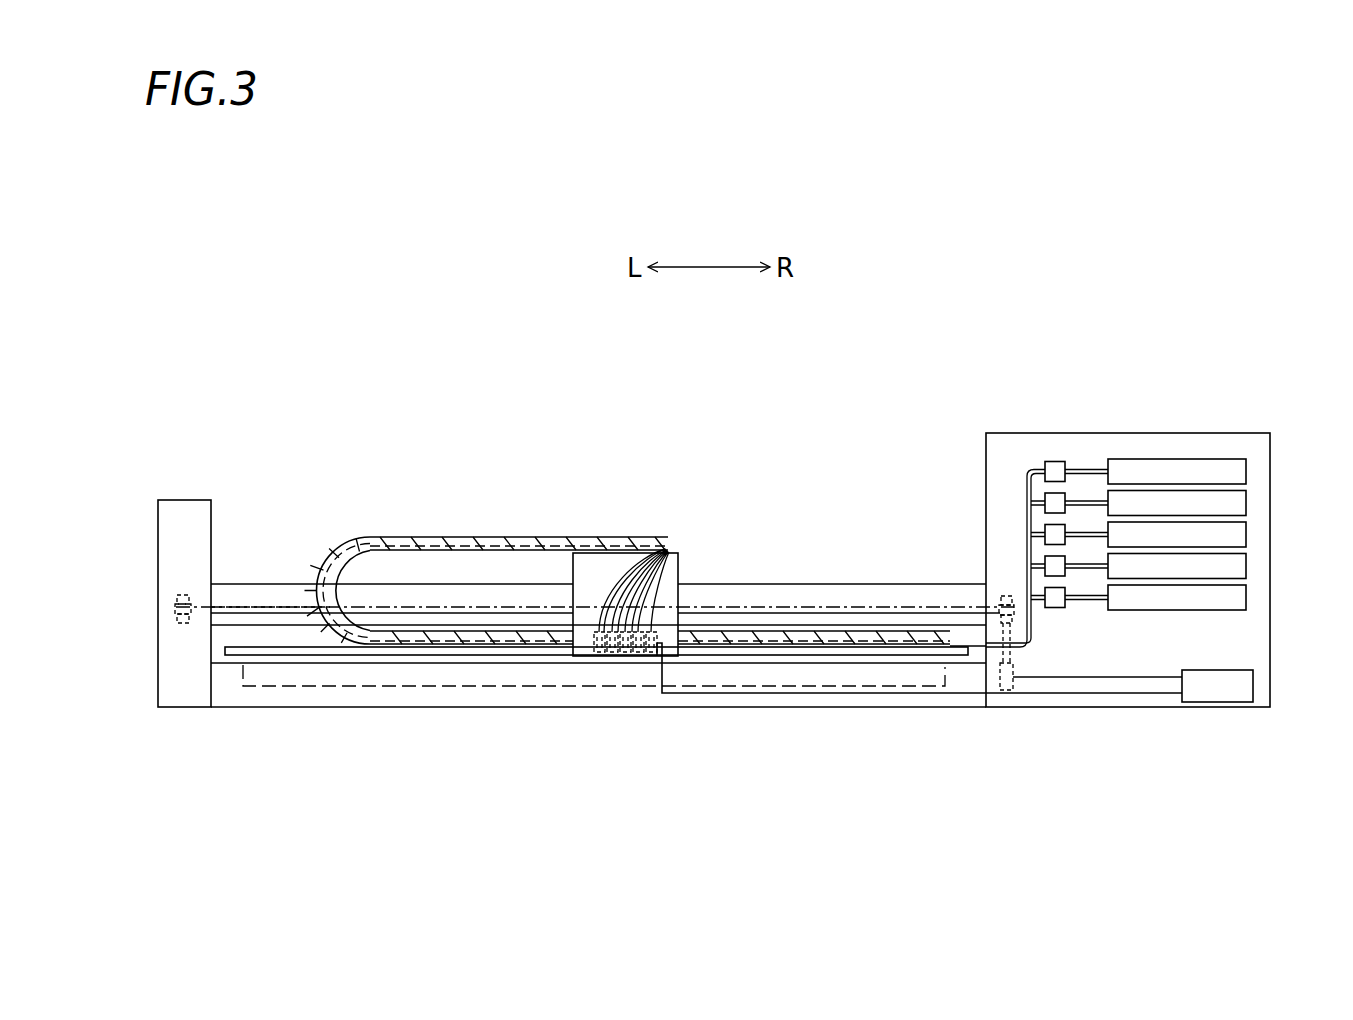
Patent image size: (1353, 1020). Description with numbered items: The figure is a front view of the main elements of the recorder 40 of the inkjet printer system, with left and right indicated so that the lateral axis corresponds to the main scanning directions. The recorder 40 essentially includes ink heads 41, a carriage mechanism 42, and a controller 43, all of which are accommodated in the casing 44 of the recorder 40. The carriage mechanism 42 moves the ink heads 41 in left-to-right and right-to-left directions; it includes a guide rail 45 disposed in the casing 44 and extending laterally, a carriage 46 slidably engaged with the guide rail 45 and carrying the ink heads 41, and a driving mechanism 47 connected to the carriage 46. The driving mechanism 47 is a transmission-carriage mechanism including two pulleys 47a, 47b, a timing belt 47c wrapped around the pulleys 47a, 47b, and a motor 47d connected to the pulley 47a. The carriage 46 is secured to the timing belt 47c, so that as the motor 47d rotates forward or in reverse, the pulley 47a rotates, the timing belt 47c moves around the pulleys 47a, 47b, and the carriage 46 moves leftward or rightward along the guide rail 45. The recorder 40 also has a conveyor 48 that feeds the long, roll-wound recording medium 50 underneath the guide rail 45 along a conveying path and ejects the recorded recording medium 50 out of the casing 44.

The recorder 40 is at (575, 400).
The ink heads 41 is at (599, 655).
The carriage mechanism 42 is at (902, 498).
The controller 43 is at (1215, 702).
The casing 44 is at (1213, 433).
The guide rail 45 is at (802, 590).
The carriage 46 is at (680, 596).
The driving mechanism 47 is at (962, 580).
The pulley 47a is at (1000, 598).
The pulley 47b is at (186, 595).
The timing belt 47c is at (265, 607).
The motor 47d is at (1013, 686).
The conveyor 48 is at (885, 656).
The recording medium 50 is at (326, 690).